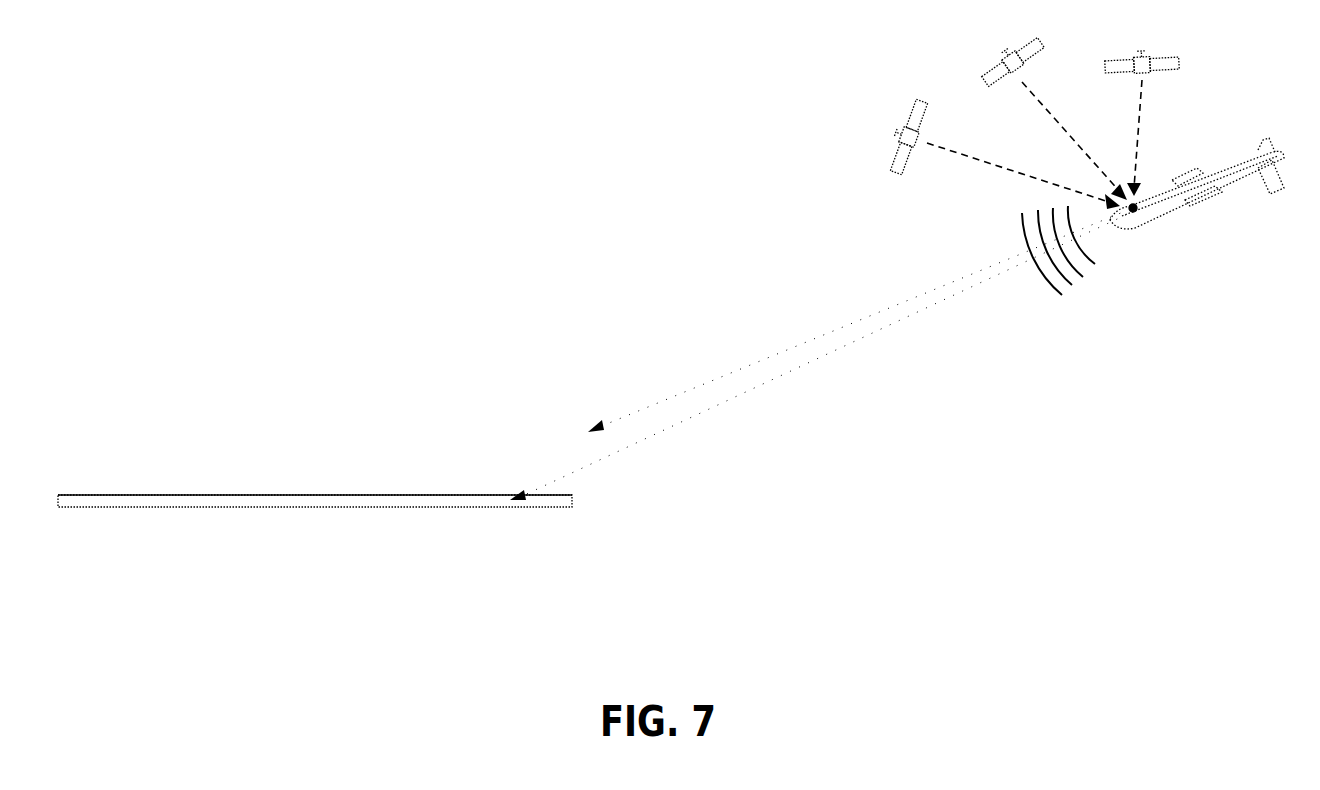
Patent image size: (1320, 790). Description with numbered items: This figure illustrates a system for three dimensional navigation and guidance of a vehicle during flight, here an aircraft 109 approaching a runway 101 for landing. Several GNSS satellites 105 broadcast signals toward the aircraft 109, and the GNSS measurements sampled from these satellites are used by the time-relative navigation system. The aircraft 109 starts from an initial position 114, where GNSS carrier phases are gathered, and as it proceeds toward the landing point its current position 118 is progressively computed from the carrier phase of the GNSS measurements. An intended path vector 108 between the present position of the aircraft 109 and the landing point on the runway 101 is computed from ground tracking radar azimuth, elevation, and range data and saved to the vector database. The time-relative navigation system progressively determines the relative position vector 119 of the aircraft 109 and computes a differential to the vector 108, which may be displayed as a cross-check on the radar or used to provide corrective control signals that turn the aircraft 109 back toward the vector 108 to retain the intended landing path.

The runway 101 is at (143, 501).
The GNSS satellites 105 is at (895, 163).
The vector 108 is at (872, 337).
The aircraft 109 is at (1227, 168).
The initial position 114 is at (1133, 214).
The current position 118 is at (1061, 302).
The relative position vector 119 is at (870, 308).